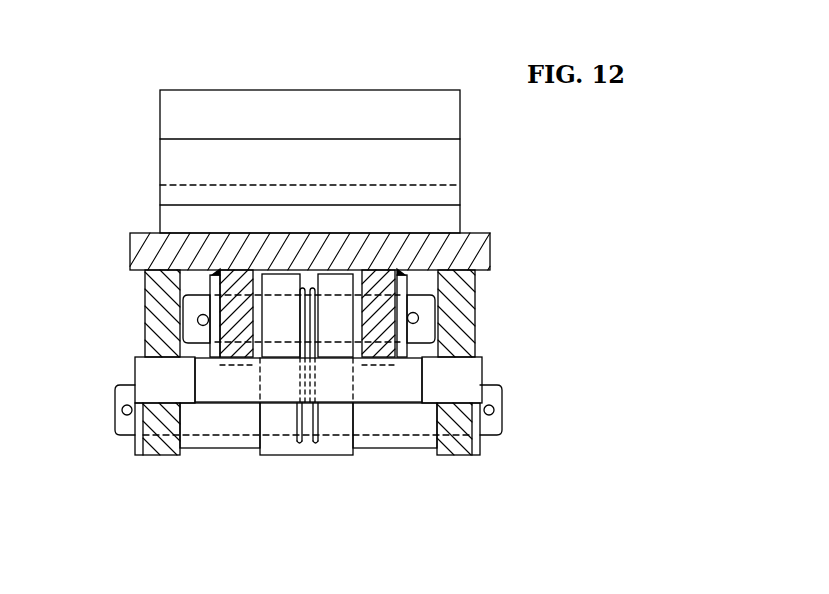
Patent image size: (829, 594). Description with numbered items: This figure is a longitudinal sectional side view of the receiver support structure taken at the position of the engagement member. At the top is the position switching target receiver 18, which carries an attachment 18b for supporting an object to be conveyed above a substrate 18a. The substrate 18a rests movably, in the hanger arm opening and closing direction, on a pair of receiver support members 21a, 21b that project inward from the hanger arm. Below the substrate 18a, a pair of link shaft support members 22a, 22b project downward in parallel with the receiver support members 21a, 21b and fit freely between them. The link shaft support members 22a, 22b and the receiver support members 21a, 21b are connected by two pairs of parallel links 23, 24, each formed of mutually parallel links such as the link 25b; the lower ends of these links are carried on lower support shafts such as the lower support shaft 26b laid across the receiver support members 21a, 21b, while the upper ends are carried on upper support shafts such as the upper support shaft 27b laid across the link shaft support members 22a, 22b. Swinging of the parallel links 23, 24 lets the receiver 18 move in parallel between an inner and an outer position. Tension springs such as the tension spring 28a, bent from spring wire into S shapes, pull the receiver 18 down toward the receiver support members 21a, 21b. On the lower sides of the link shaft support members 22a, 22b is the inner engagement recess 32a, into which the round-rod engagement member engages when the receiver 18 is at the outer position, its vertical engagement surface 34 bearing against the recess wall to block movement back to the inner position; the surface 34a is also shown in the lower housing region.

The position switching target receiver 18 is at (374, 84).
The attachment 18b is at (262, 112).
The substrate 18a is at (148, 250).
The parallel link 24 is at (266, 273).
The link 25b is at (335, 277).
The parallel link 23 is at (351, 273).
The link shaft support member 22b is at (150, 297).
The link shaft support member 22a is at (455, 295).
The receiver support member 21b is at (186, 326).
The receiver support member 21a is at (463, 306).
The upper support shaft 27b is at (140, 352).
The inner engagement recess 32a is at (389, 358).
The vertical engagement surface 34 is at (245, 404).
The lower housing portion 34a is at (378, 380).
The tension spring 28a is at (316, 442).
The lower support shaft 26b is at (498, 420).